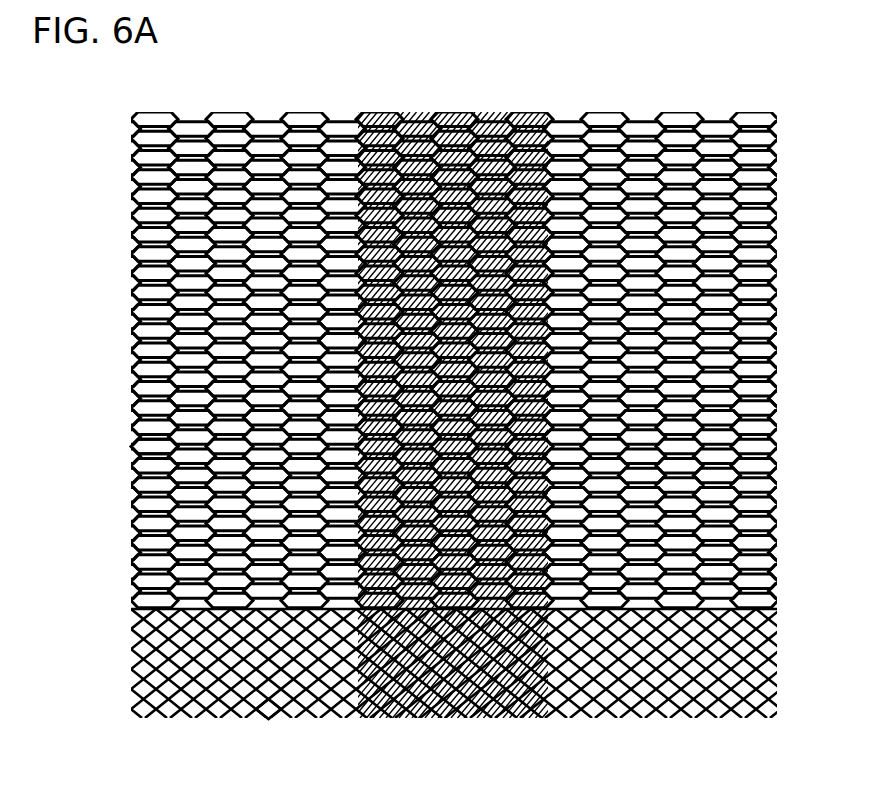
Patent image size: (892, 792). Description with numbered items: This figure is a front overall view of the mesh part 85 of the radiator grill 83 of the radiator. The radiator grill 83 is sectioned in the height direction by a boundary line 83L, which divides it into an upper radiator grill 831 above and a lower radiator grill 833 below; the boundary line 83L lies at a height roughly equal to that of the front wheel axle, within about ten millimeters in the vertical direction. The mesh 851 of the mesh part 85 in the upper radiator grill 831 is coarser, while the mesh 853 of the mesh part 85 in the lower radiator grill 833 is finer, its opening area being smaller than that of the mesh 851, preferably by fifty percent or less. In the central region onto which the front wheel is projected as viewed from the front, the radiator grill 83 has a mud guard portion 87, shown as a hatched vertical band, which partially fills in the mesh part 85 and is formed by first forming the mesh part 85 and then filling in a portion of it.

The mesh part 85 is at (446, 408).
The radiator grill 83 is at (446, 441).
The upper radiator grill 831 is at (447, 363).
The lower radiator grill 833 is at (446, 689).
The mesh 851 is at (160, 450).
The mesh 853 is at (262, 712).
The boundary line 83L is at (784, 614).
The mud guard portion 87 is at (358, 732).